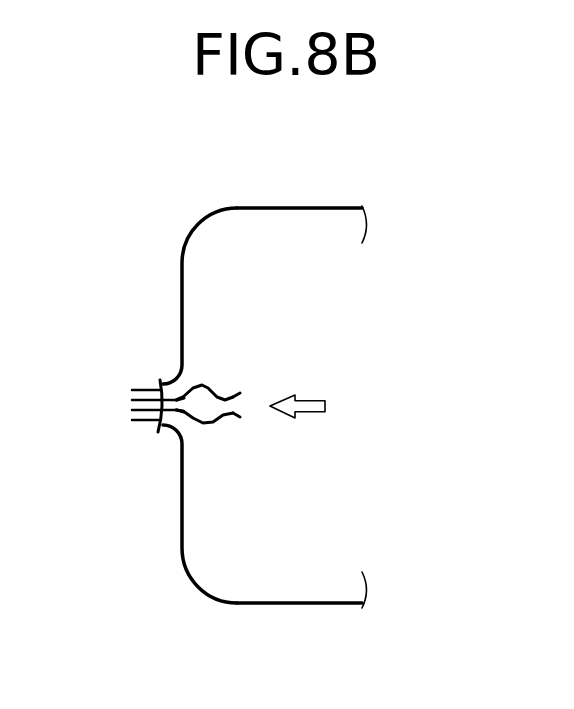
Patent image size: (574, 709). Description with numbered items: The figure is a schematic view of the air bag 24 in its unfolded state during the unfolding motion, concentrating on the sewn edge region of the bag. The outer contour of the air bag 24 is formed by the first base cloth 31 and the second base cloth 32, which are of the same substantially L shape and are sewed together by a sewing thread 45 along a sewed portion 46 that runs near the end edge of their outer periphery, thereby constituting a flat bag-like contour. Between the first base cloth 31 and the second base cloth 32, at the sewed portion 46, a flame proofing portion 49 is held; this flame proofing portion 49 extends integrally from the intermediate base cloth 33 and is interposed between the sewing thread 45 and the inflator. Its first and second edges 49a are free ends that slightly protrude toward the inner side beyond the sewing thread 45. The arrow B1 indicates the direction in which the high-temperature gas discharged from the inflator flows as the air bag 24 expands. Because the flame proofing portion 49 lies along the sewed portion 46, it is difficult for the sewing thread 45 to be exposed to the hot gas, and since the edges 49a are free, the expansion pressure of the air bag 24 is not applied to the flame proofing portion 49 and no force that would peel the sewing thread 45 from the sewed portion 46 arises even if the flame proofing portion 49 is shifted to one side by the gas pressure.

The air bag 24 is at (168, 240).
The first base cloth 31 is at (337, 605).
The second base cloth 32 is at (333, 208).
The intermediate base cloth 33 is at (185, 403).
The sewing thread 45 is at (159, 378).
The sewed portion 46 is at (139, 384).
The flame proofing portion 49 is at (205, 418).
The first and second edges 49a is at (243, 390).
The arrow B1 is at (324, 407).